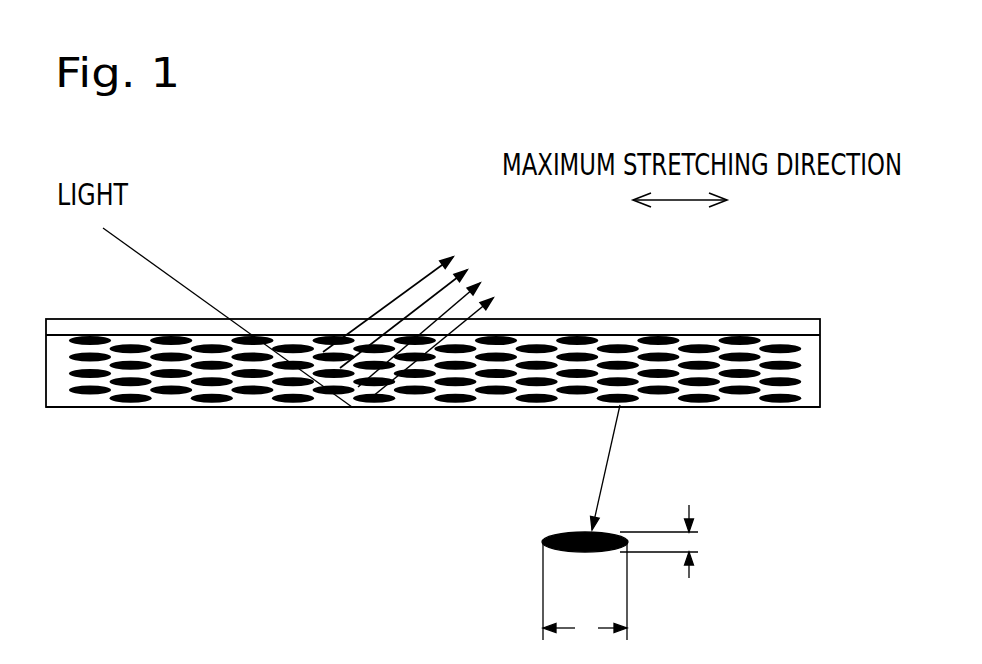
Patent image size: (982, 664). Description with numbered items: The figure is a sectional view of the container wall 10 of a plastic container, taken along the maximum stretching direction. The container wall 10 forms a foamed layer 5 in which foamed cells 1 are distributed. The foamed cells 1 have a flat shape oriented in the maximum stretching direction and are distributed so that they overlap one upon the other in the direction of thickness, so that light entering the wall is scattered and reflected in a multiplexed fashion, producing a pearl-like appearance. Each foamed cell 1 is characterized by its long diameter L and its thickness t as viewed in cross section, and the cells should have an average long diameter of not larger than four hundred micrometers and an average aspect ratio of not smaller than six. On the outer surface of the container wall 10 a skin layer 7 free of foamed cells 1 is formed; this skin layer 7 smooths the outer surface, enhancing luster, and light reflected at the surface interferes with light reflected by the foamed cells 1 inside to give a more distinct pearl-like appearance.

The container wall 10 is at (293, 461).
The skin layer 7 is at (774, 330).
The foamed layer 5 is at (813, 373).
The foamed cells 1 is at (788, 405).